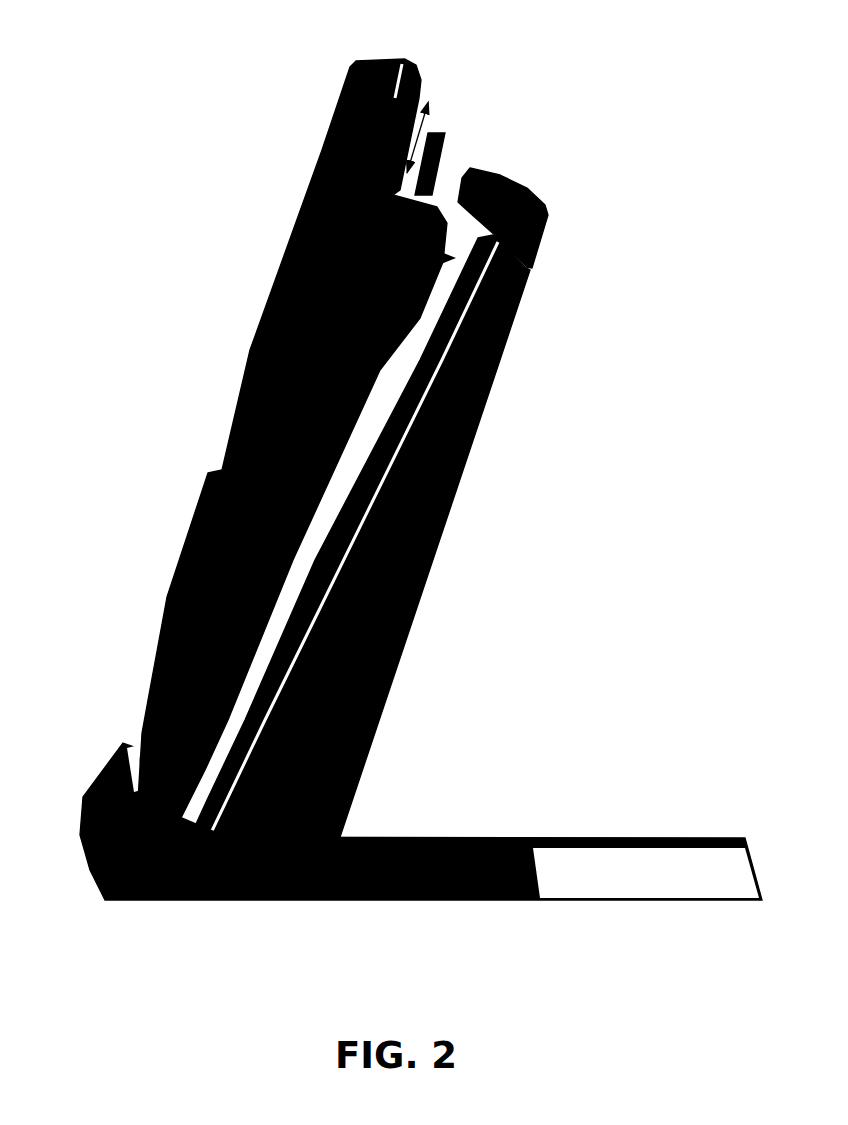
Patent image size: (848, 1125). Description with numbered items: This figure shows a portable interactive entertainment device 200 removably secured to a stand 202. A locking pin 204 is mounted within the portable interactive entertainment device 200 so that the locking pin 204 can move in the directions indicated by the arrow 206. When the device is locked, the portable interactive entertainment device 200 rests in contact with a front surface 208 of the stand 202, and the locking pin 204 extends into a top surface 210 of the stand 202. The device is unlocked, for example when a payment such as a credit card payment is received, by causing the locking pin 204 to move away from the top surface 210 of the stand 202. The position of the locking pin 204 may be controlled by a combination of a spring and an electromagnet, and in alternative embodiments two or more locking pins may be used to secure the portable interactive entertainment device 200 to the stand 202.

The portable interactive entertainment device 200 is at (250, 340).
The stand 202 is at (510, 382).
The locking pin 204 is at (455, 152).
The arrow 206 is at (437, 110).
The front surface 208 is at (337, 238).
The top surface 210 is at (540, 183).